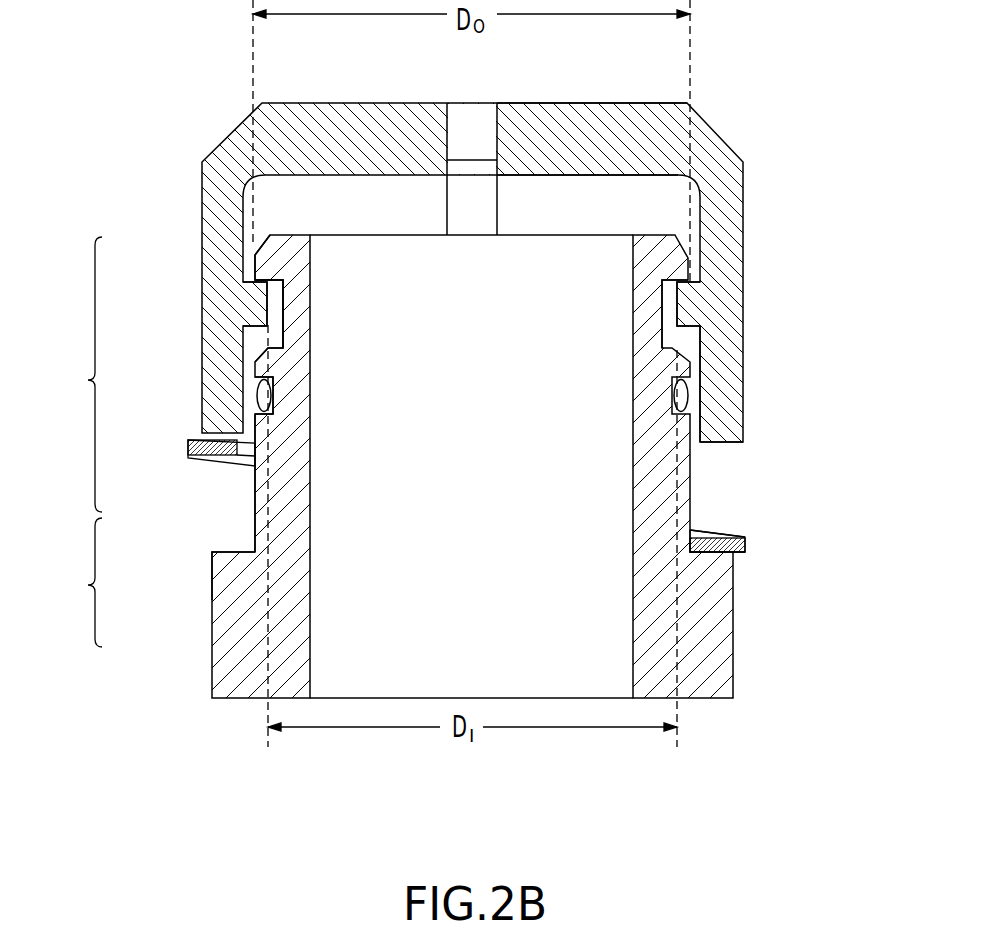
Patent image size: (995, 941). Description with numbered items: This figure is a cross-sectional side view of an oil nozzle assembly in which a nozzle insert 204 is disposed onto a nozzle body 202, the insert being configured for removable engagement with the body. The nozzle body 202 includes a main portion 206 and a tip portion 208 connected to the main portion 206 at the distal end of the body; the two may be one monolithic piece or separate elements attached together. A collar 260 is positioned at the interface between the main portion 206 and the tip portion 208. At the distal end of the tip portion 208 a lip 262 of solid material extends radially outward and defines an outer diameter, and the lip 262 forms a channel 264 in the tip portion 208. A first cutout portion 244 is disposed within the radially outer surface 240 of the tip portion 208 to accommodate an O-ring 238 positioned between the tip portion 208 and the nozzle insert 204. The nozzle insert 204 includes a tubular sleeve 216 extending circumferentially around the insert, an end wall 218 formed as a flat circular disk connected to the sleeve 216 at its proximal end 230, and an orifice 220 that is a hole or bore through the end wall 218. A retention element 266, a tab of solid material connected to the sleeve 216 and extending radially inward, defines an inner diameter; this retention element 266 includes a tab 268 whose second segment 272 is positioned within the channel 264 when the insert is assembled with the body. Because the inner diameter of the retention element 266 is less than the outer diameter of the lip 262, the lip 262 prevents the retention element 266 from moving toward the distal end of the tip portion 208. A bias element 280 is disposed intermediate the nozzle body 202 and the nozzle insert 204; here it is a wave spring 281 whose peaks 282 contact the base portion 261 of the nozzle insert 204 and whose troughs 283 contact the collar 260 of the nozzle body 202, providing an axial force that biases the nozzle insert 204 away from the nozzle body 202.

The nozzle body 202 is at (735, 642).
The nozzle insert 204 is at (740, 203).
The main portion 206 is at (75, 582).
The tip portion 208 is at (76, 374).
The sleeve 216 is at (739, 314).
The end wall 218 is at (604, 101).
The orifice 220 is at (466, 124).
The proximal end 230 is at (535, 101).
The O-ring 238 is at (258, 393).
The radially outer surface 240 is at (257, 478).
The first cutout portion 244 is at (273, 393).
The collar 260 is at (227, 553).
The base portion 261 is at (727, 444).
The lip 262 is at (268, 270).
The channel 264 is at (297, 317).
The retention element 266 is at (255, 302).
The tab 268 is at (697, 306).
The second segment 272 is at (695, 314).
The bias element 280 is at (740, 538).
The wave spring 281 is at (744, 546).
The peaks 282 is at (188, 445).
The troughs 283 is at (718, 532).